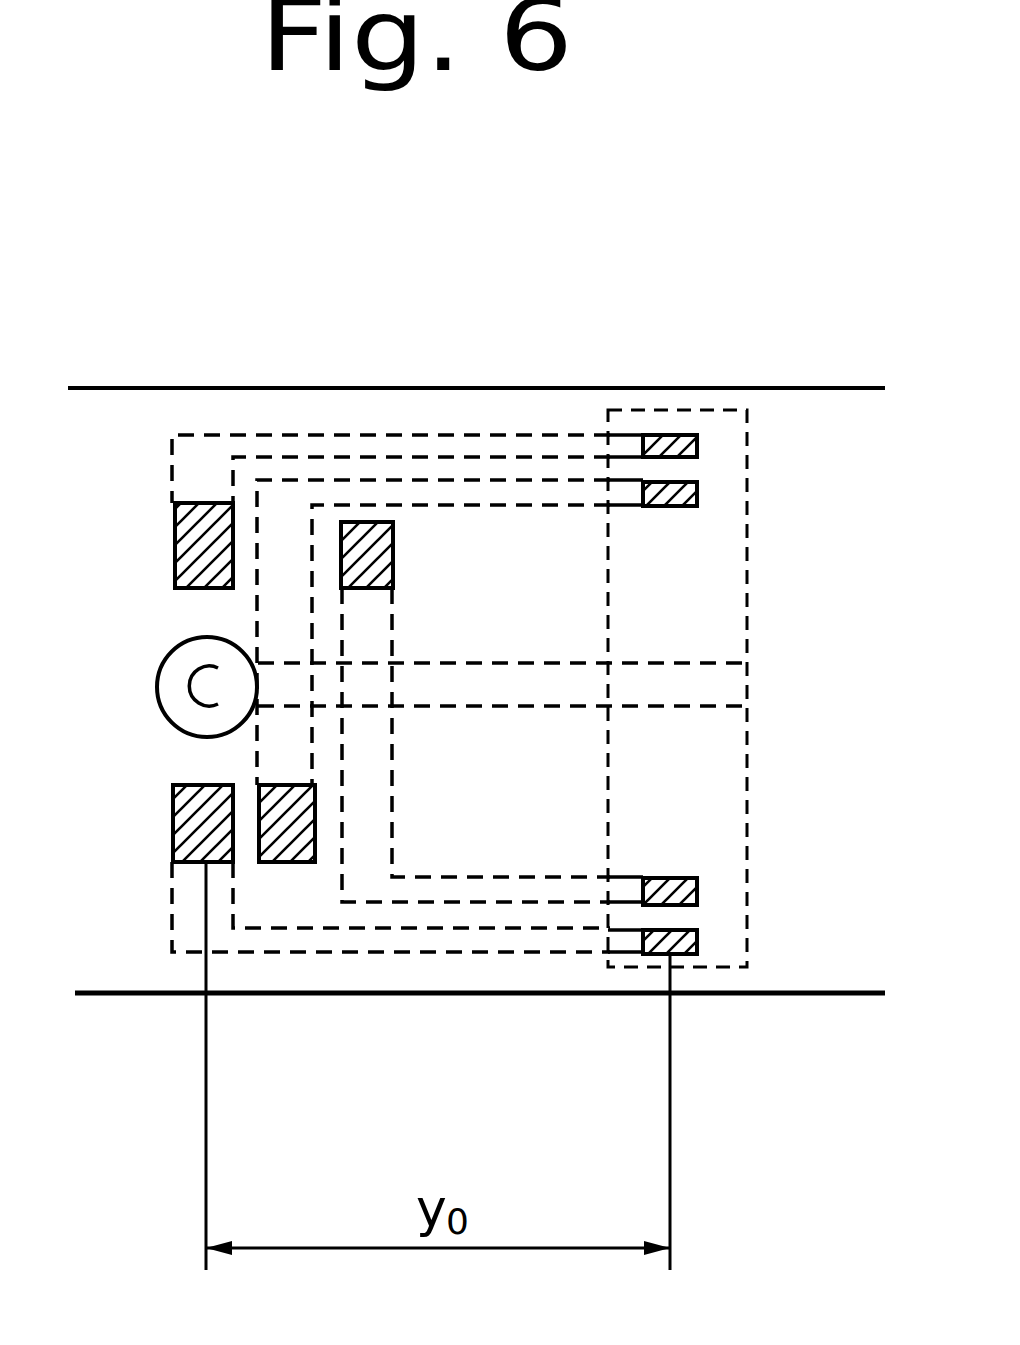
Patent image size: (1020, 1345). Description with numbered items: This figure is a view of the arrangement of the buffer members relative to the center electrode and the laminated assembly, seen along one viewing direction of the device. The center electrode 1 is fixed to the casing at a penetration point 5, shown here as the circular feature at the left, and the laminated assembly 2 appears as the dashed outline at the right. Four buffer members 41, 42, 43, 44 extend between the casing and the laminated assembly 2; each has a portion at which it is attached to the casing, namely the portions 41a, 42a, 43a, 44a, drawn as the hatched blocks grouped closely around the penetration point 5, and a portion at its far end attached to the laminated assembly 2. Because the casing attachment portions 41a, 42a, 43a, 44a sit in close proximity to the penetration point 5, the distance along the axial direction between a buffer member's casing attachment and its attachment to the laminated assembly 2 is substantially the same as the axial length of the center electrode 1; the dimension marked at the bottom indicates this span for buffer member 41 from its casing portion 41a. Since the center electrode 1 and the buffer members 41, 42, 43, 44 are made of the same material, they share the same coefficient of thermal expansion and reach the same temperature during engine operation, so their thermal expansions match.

The center electrode 1 is at (200, 690).
The laminated assembly 2 is at (740, 820).
The penetration point 5 is at (162, 680).
The buffer member 41 is at (420, 940).
The casing attachment portion of buffer member 41a is at (187, 832).
The buffer member 42 is at (467, 432).
The casing attachment portion of buffer member 42a is at (183, 557).
The buffer member 43 is at (540, 890).
The casing attachment portion of buffer member 43a is at (385, 560).
The buffer member 44 is at (563, 500).
The casing attachment portion of buffer member 44a is at (302, 812).